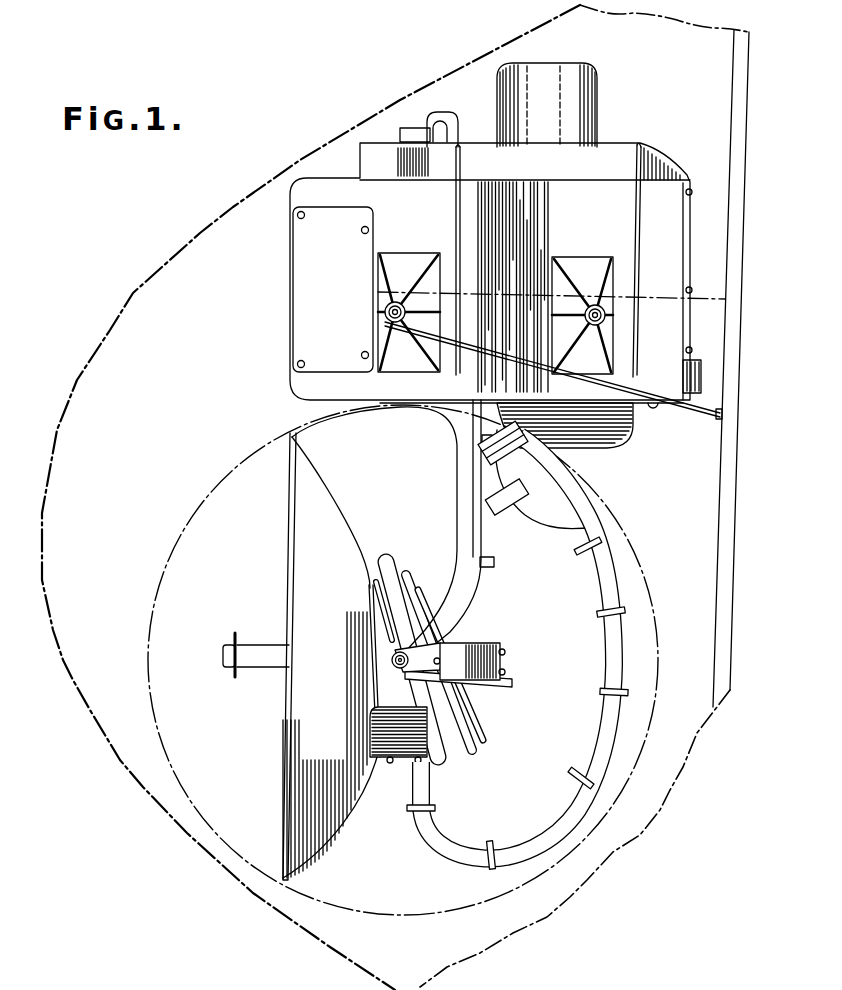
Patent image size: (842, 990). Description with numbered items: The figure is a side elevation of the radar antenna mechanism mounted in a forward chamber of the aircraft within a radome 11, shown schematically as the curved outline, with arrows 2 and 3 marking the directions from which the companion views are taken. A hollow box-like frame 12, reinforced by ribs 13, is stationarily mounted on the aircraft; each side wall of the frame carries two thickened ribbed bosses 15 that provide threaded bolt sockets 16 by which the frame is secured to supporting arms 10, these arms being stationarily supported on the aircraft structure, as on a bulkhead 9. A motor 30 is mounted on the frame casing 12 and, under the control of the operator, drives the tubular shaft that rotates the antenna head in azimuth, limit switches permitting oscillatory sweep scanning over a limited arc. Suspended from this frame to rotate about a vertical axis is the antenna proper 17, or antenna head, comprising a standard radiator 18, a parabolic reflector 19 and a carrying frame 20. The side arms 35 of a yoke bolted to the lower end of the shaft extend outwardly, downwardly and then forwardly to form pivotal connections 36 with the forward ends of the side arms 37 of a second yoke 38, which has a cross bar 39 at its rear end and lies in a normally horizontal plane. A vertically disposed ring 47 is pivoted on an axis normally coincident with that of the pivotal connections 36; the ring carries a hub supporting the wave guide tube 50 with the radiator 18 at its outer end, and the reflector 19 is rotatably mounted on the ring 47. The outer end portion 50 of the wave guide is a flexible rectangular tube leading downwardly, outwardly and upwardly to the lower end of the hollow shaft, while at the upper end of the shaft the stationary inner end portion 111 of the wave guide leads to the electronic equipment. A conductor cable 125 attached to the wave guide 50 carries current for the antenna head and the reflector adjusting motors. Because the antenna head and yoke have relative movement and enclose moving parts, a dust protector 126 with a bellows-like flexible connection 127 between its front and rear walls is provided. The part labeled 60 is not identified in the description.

The section line 2-2 viewing direction 2 is at (447, 68).
The section line 3-3 viewing direction 3 is at (395, 933).
The bulkhead 9 is at (737, 266).
The supporting arms 10 is at (706, 410).
The radome 11 is at (142, 787).
The hollow box-like frame 12 is at (694, 139).
The ribs 13 is at (607, 155).
The thickened ribbed bosses 15 is at (406, 265).
The threaded bolt sockets 16 is at (390, 312).
The antenna proper 17 is at (672, 624).
The standard radiator 18 is at (260, 665).
The parabolic reflector 19 is at (287, 555).
The carrying frame 20 is at (388, 530).
The motor 30 is at (597, 90).
The side arms 35 is at (484, 547).
The pivotal connections 36 is at (392, 661).
The side arms 37 is at (478, 643).
The second yoke 38 is at (514, 689).
The cross bar 39 is at (505, 665).
The vertically disposed ring 47 is at (353, 762).
The wave guide tube 50 is at (610, 571).
The arm portion 60 is at (468, 620).
The stationary inner end portion of the wave guide 111 is at (410, 127).
The conductor cable 125 is at (605, 668).
The dust protector 126 is at (483, 735).
The bellows-like flexible connection 127 is at (468, 756).